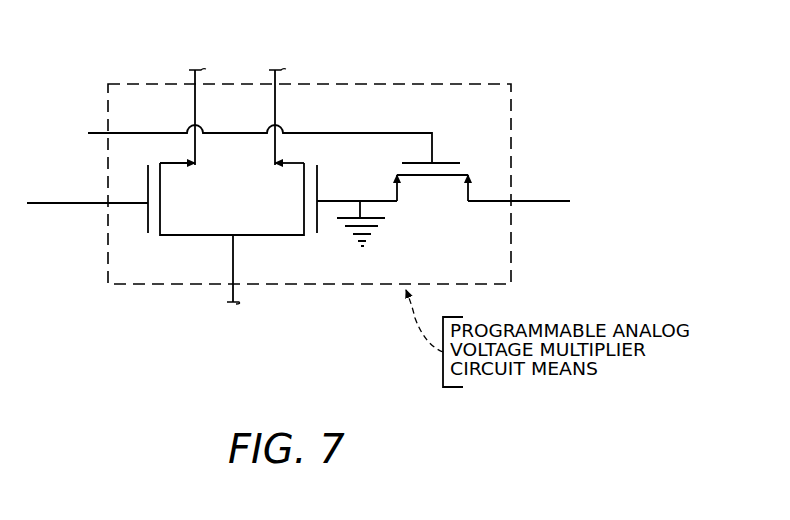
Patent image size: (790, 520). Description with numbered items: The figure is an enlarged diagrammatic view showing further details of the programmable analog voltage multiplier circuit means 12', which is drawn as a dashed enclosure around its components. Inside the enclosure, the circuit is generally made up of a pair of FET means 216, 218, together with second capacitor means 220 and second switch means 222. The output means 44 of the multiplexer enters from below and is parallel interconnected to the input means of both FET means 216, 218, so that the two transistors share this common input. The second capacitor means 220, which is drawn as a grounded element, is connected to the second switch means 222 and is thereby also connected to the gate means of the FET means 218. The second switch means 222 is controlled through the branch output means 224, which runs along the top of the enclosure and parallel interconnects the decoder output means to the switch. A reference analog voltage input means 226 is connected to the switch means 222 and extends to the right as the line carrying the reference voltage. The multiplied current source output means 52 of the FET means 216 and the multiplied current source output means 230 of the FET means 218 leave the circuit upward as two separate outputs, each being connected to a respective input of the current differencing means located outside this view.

The programmable analog voltage multiplier circuit means 12' is at (311, 151).
The multiplied current source output means 52 is at (195, 107).
The multiplied current source output means 230 is at (275, 108).
The branch output means 224 is at (356, 133).
The FET means 216 is at (155, 240).
The FET means 218 is at (309, 240).
The output means of multiplexer 44 is at (232, 266).
The second capacitor means 220 is at (380, 216).
The second switch means 222 is at (468, 172).
The reference analog voltage input means 226 is at (529, 201).